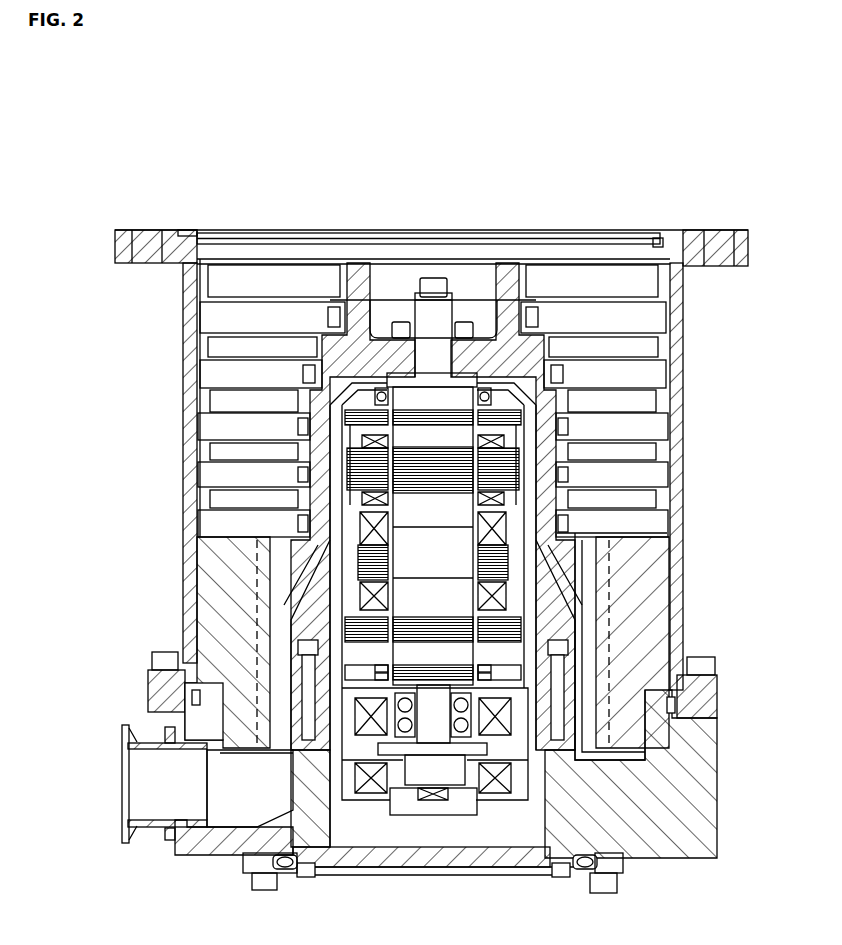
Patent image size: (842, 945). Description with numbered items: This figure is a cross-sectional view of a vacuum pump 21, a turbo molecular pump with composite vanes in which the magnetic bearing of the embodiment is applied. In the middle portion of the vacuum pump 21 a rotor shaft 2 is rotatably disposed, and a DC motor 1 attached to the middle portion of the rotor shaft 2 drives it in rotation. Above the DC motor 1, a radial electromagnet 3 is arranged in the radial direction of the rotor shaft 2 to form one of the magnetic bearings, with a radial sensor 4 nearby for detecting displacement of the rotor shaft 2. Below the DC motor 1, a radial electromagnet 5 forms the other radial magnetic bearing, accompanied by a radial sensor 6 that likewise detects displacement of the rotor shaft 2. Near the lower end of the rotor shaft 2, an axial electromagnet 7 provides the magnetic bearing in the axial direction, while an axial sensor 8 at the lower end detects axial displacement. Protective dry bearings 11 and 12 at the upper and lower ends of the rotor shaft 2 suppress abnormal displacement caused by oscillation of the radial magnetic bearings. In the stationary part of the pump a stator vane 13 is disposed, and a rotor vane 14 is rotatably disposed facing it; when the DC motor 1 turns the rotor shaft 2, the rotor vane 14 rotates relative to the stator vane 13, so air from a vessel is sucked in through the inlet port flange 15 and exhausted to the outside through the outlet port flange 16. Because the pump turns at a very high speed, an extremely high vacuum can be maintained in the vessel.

The vacuum pump 21 is at (417, 214).
The inlet port flange 15 is at (203, 233).
The rotor shaft 2 is at (437, 285).
The protective dry bearing 11 is at (488, 388).
The rotor vane 14 is at (574, 283).
The stator vane 13 is at (598, 316).
The radial sensor 4 is at (560, 388).
The radial electromagnet 3 is at (505, 468).
The DC motor 1 is at (512, 577).
The radial electromagnet 5 is at (520, 627).
The radial sensor 6 is at (527, 660).
The axial electromagnet 7 is at (520, 692).
The axial sensor 8 is at (427, 807).
The protective dry bearing 12 is at (463, 733).
The outlet port flange 16 is at (148, 745).